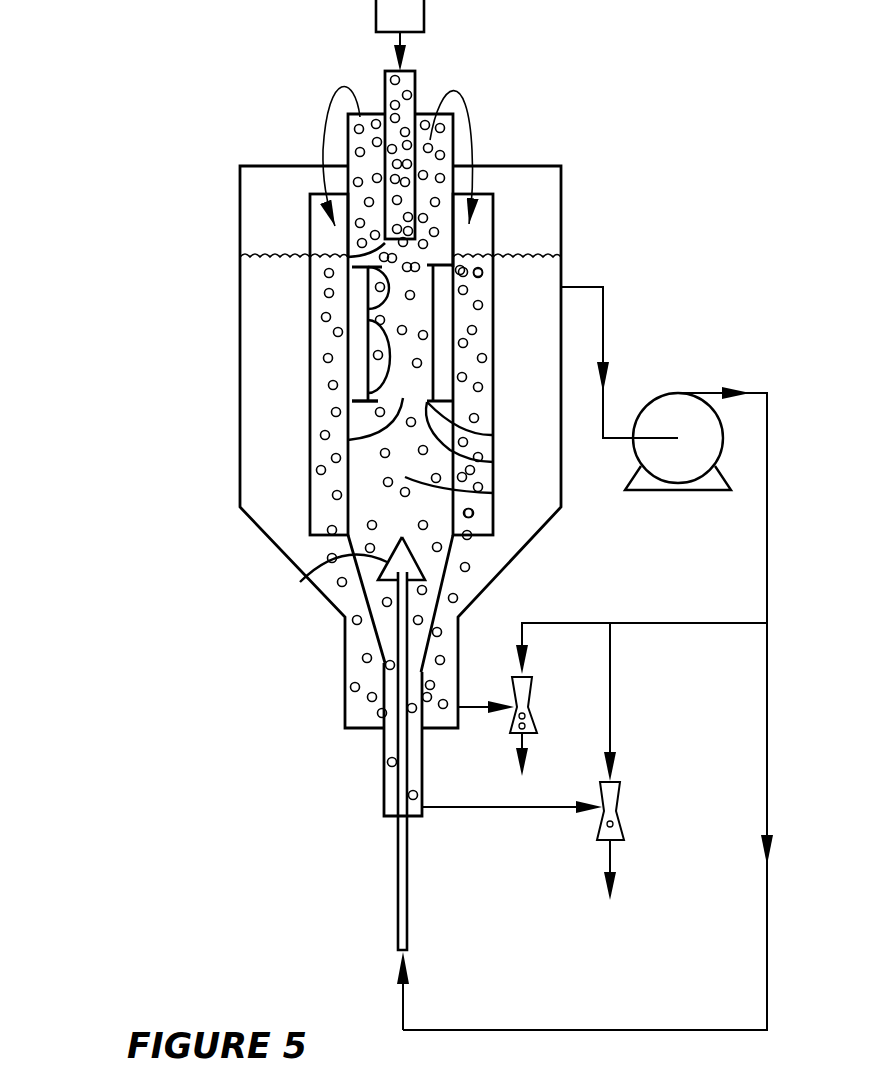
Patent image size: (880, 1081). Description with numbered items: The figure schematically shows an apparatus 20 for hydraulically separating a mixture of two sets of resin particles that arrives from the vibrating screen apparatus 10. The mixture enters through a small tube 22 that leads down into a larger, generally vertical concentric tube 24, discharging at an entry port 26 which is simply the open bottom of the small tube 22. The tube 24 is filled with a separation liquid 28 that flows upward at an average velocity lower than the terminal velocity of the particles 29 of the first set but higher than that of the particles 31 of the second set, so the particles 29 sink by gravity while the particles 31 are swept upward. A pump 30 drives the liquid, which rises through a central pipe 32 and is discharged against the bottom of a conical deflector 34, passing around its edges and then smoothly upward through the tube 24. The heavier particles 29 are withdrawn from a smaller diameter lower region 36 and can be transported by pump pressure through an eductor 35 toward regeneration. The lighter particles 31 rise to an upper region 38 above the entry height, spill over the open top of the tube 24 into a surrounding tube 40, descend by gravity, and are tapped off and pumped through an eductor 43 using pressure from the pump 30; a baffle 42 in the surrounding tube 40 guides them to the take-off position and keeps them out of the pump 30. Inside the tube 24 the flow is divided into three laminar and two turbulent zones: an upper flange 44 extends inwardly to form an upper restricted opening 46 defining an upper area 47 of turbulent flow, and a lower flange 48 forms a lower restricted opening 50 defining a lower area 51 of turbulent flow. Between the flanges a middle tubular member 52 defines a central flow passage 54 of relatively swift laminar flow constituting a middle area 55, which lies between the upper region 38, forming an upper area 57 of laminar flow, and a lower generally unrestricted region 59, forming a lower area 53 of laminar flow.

The vibrating screen apparatus 10 is at (400, 35).
The apparatus 20 is at (576, 153).
The small tube 22 is at (425, 167).
The tube 24 is at (427, 267).
The entry port 26 is at (356, 255).
The separation liquid 28 is at (409, 527).
The particles of the modified first set 29 is at (387, 665).
The pump 30 is at (688, 466).
The particles of the modified second set 31 is at (357, 182).
The central pipe 32 is at (397, 712).
The deflector 34 is at (325, 576).
The eductor 35 is at (620, 813).
The lower region 36 is at (378, 788).
The upper region 38 is at (344, 140).
The surrounding tube 40 is at (576, 282).
The baffle 42 is at (498, 307).
The eductor 43 is at (533, 707).
The upper flange 44 is at (463, 241).
The upper restricted opening 46 is at (367, 311).
The upper area of turbulent flow 47 is at (397, 268).
The lower flange 48 is at (493, 434).
The lower restricted opening 50 is at (493, 462).
The lower area of turbulent flow 51 is at (350, 437).
The middle tubular member 52 is at (366, 340).
The lower area of laminar flow 53 is at (493, 493).
The central flow passage 54 is at (352, 399).
The middle area of laminar flow 55 is at (412, 318).
The upper area of laminar flow 57 is at (368, 162).
The lower generally unrestricted region 59 is at (347, 474).